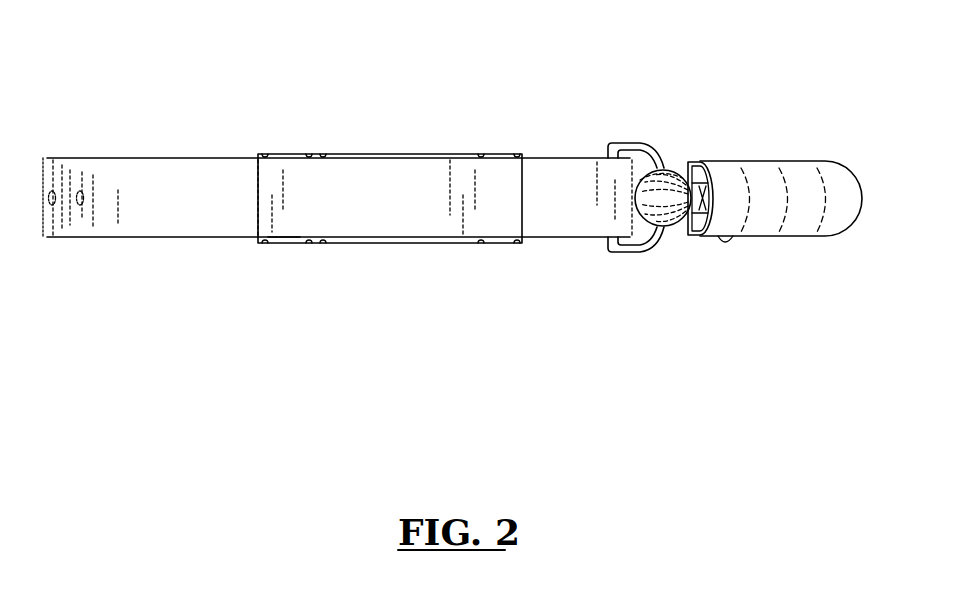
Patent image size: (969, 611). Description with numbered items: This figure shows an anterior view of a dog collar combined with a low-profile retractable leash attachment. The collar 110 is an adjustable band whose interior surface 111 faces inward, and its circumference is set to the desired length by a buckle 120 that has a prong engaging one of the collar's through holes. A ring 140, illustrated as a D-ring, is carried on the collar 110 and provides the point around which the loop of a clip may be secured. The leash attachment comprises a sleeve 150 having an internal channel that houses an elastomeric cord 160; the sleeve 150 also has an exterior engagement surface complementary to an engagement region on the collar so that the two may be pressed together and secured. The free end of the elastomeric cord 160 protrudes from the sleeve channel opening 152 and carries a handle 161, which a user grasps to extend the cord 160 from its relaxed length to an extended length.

The collar 110 is at (155, 240).
The interior surface 111 is at (285, 230).
The buckle 120 is at (378, 154).
The ring 140 is at (632, 252).
The sleeve 150 is at (790, 178).
The sleeve channel opening 152 is at (696, 160).
The elastomeric cord 160 is at (697, 237).
The handle 161 is at (650, 170).